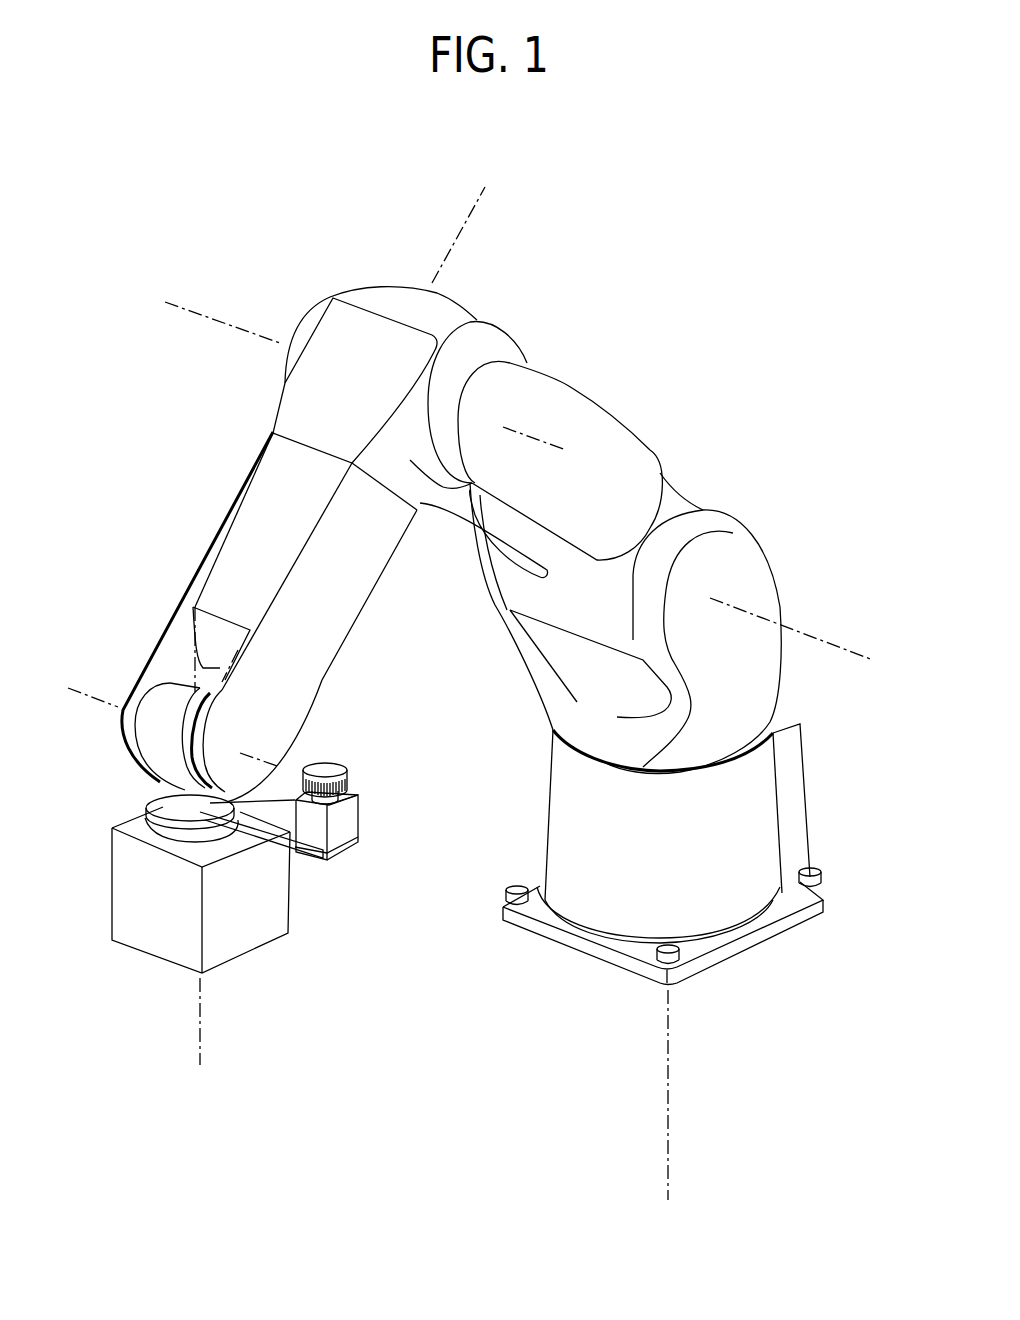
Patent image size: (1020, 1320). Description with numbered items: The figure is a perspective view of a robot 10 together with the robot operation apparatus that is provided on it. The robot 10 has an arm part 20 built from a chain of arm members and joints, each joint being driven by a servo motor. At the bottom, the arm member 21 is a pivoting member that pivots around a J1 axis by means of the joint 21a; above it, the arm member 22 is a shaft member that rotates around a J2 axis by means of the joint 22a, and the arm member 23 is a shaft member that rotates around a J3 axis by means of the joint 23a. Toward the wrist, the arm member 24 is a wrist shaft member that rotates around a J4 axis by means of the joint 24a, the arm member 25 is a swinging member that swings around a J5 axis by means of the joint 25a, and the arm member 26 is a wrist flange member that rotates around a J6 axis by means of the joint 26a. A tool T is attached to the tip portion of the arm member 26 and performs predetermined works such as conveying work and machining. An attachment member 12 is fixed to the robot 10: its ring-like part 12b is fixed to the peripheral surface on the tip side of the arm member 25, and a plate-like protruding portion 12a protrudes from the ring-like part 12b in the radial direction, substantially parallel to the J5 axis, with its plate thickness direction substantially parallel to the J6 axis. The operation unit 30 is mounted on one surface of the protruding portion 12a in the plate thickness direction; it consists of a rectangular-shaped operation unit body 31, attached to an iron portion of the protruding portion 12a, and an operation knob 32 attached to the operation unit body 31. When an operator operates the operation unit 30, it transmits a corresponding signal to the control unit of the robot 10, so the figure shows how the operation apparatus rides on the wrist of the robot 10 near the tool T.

The robot 10 is at (634, 396).
The attachment member 12 is at (273, 853).
The plate-like protruding portion 12a is at (272, 817).
The ring-like part 12b is at (147, 793).
The arm part 20 is at (572, 386).
The arm member 21 is at (773, 593).
The joint 21a is at (795, 720).
The arm member 22 is at (660, 455).
The joint 22a is at (750, 509).
The arm member 23 is at (277, 407).
The joint 23a is at (485, 337).
The arm member 24 is at (383, 583).
The joint 24a is at (252, 422).
The arm member 25 is at (150, 745).
The joint 25a is at (157, 666).
The arm member 26 is at (163, 827).
The joint 26a is at (129, 827).
The operation unit 30 is at (383, 789).
The operation unit body 31 is at (360, 825).
The operation knob 32 is at (345, 765).
The tool T is at (197, 837).
The J1 axis J1 is at (669, 1100).
The J2 axis J2 is at (855, 648).
The J3 axis J3 is at (213, 313).
The J4 axis J4 is at (223, 663).
The J5 axis J5 is at (80, 687).
The J6 axis J6 is at (201, 1018).